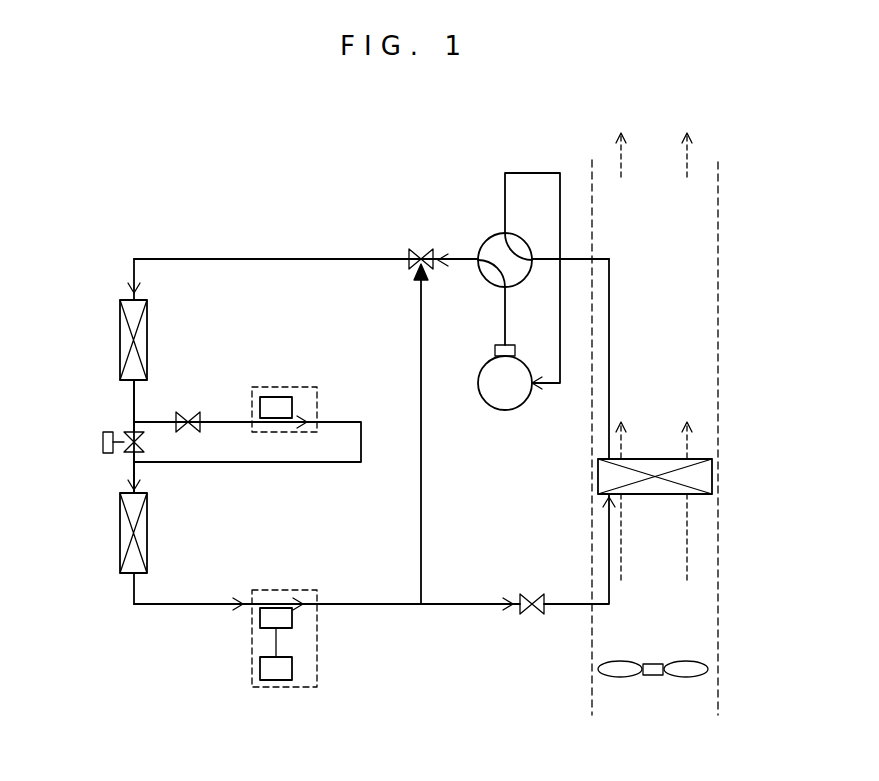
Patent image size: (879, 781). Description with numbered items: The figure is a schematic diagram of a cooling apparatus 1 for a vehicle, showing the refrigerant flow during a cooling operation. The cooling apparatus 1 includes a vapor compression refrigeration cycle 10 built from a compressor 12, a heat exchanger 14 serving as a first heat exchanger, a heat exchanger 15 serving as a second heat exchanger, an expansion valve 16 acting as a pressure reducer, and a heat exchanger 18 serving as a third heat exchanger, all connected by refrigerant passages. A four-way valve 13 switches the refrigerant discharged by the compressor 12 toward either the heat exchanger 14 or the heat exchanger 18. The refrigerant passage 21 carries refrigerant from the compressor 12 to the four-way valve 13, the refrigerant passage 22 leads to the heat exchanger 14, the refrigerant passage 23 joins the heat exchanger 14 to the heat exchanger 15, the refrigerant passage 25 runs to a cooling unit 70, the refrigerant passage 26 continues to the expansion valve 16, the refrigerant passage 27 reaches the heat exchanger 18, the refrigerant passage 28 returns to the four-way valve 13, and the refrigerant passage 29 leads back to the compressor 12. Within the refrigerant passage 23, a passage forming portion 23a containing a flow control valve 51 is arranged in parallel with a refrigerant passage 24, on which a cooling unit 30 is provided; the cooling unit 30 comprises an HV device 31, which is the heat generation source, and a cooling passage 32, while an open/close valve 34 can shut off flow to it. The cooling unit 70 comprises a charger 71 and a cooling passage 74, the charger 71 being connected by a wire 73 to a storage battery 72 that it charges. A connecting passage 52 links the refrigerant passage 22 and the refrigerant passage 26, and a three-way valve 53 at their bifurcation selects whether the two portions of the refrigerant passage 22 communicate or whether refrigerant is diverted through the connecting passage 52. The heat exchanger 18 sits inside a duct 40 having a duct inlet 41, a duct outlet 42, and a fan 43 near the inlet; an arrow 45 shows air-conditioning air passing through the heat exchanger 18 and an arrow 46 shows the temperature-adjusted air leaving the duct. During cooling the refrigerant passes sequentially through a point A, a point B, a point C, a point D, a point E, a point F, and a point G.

The cooling apparatus 1 is at (149, 167).
The vapor compression refrigeration cycle 10 is at (268, 250).
The compressor 12 is at (482, 368).
The four-way valve 13 is at (494, 234).
The heat exchanger 14 is at (130, 343).
The heat exchanger 15 is at (130, 530).
The expansion valve 16 is at (533, 614).
The heat exchanger 18 is at (610, 475).
The refrigerant passage 21 is at (505, 333).
The refrigerant passage 22 is at (458, 258).
The refrigerant passage 23 is at (132, 397).
The passage forming portion 23a is at (132, 462).
The refrigerant passage 24 is at (198, 488).
The refrigerant passage 25 is at (202, 608).
The refrigerant passage 26 is at (382, 606).
The refrigerant passage 27 is at (572, 600).
The refrigerant passage 28 is at (580, 257).
The refrigerant passage 29 is at (534, 173).
The cooling unit 30 is at (306, 387).
The HV device 31 is at (277, 397).
The cooling passage 32 is at (285, 425).
The open/close valve 34 is at (186, 410).
The duct 40 is at (718, 312).
The duct inlet 41 is at (703, 715).
The duct outlet 42 is at (702, 168).
The fan 43 is at (700, 670).
The arrow 45 is at (687, 535).
The arrow 46 is at (687, 173).
The flow control valve 51 is at (103, 441).
The connecting passage 52 is at (422, 527).
The three-way valve 53 is at (416, 252).
The cooling unit 70 is at (318, 672).
The charger 71 is at (272, 608).
The storage battery 72 is at (275, 692).
The wire 73 is at (277, 640).
The cooling passage 74 is at (283, 603).
The point A is at (560, 390).
The point B is at (505, 310).
The point C is at (132, 421).
The point D is at (361, 462).
The point E is at (134, 604).
The point F is at (477, 608).
The point G is at (560, 610).